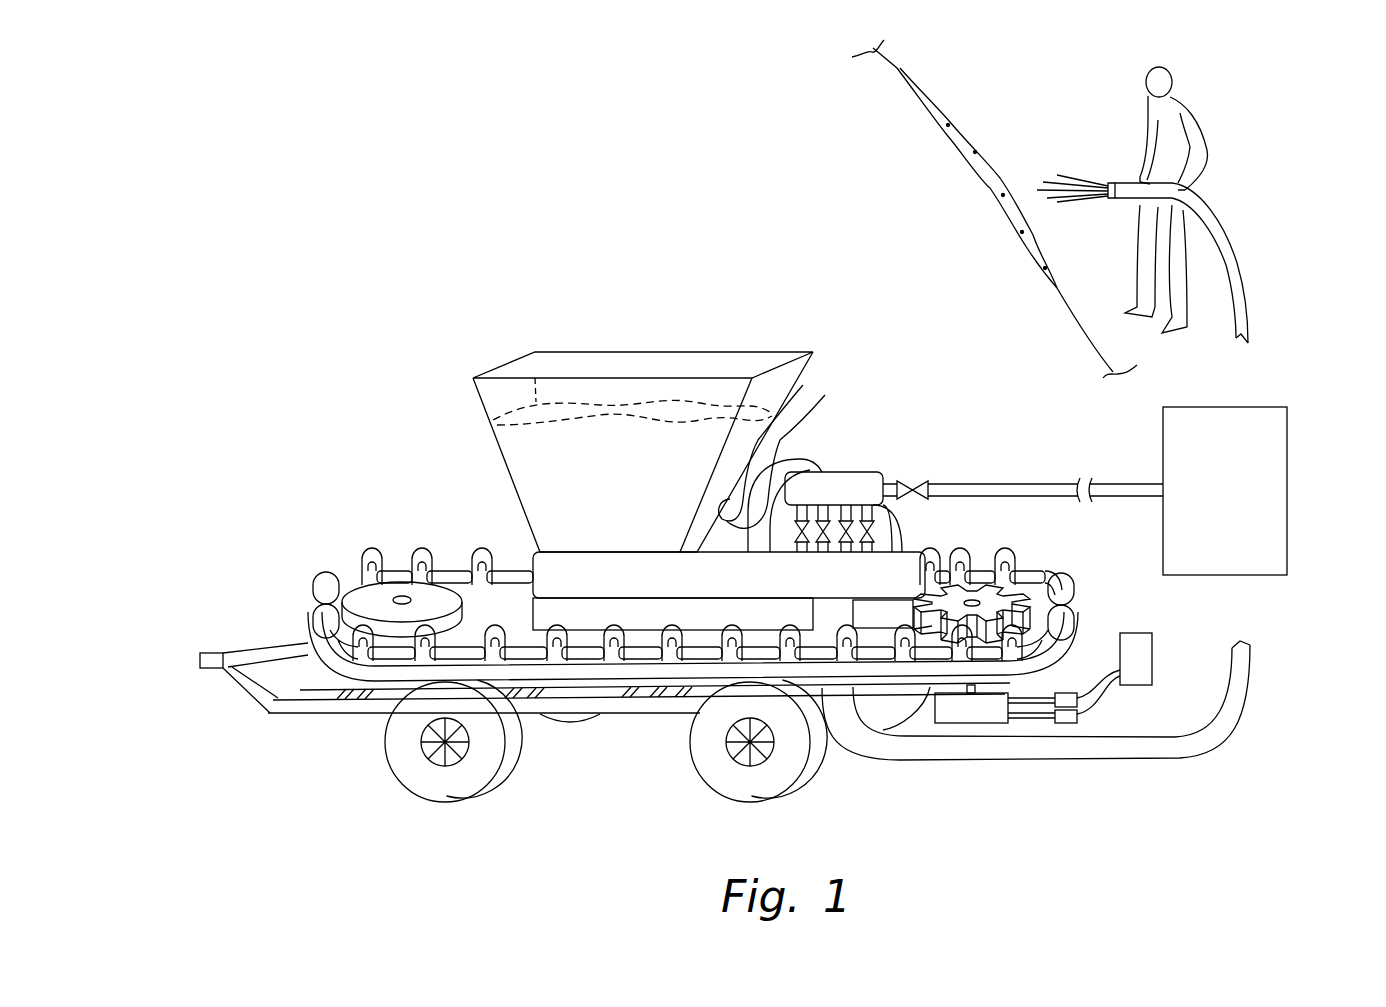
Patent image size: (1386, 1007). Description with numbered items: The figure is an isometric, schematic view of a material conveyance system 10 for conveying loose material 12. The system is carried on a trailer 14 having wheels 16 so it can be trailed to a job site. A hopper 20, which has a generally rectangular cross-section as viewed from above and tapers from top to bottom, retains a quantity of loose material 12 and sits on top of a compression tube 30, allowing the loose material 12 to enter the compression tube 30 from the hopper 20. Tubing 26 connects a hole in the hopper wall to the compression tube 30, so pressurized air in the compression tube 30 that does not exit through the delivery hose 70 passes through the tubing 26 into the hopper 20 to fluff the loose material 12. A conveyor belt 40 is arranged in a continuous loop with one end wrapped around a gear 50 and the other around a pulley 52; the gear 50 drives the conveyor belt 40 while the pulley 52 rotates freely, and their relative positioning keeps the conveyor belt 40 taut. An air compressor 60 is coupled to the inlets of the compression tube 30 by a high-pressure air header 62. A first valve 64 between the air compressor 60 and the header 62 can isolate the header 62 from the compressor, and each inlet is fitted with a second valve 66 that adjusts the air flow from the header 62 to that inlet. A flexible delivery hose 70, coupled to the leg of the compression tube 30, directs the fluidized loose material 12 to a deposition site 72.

The material conveyance system 10 is at (362, 230).
The loose material 12 is at (602, 405).
The trailer 14 is at (273, 642).
The wheels 16 is at (520, 756).
The hopper 20 is at (497, 462).
The tubing 26 is at (815, 464).
The compression tube 30 is at (812, 388).
The conveyor belt 40 is at (346, 577).
The gear 50 is at (1036, 575).
The pulley 52 is at (337, 620).
The air compressor 60 is at (1288, 466).
The high-pressure air header 62 is at (858, 472).
The first valve 64 is at (900, 483).
The second valves 66 is at (874, 517).
The delivery hose 70 is at (1013, 762).
The deposition site 72 is at (960, 127).